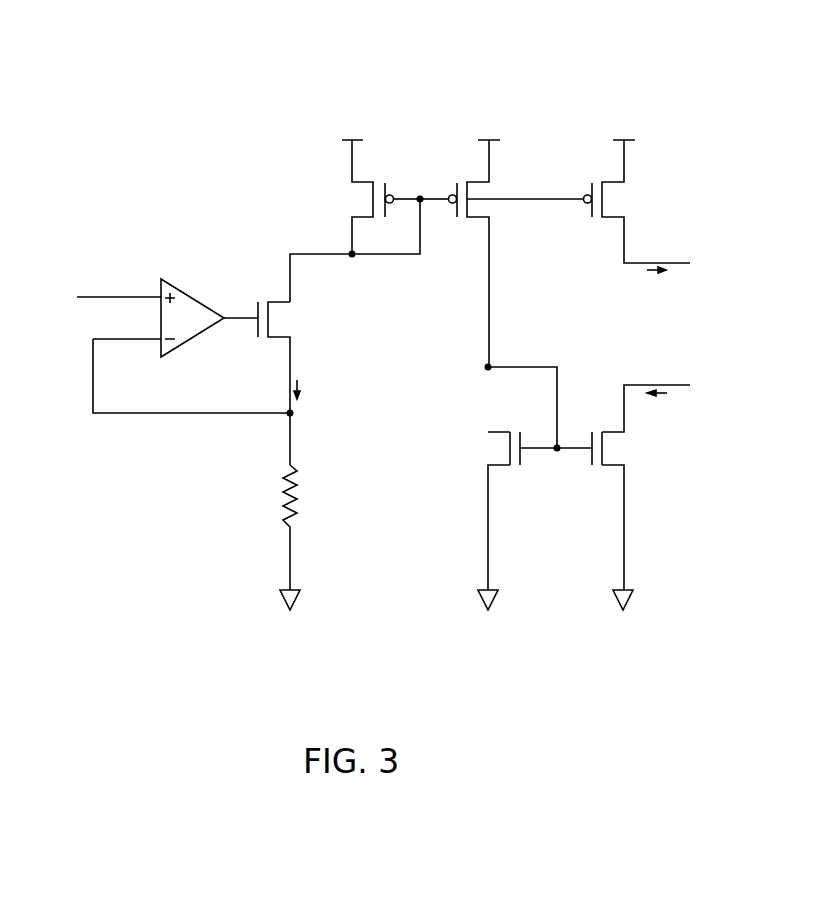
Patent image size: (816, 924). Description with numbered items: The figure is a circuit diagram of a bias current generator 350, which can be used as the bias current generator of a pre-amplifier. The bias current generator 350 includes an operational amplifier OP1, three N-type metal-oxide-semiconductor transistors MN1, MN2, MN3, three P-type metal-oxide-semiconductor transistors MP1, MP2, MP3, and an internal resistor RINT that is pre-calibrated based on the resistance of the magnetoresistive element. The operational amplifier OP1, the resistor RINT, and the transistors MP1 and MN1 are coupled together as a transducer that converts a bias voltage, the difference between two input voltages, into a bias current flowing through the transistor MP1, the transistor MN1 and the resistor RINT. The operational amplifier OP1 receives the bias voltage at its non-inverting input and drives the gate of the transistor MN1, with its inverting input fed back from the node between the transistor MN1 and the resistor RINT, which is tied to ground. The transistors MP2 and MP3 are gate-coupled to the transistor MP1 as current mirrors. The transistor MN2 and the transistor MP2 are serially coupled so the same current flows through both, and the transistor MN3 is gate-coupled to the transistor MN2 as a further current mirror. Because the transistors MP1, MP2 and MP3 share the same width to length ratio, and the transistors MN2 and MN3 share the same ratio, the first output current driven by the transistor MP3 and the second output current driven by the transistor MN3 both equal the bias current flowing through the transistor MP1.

The bias current generator 350 is at (694, 85).
The PMOS transistor MP1 is at (381, 197).
The PMOS transistor MP2 is at (460, 253).
The PMOS transistor MP3 is at (578, 201).
The NMOS transistor MN1 is at (257, 371).
The NMOS transistor MN2 is at (522, 498).
The NMOS transistor MN3 is at (623, 487).
The operational amplifier OP1 is at (192, 318).
The internal resistor RINT is at (311, 527).